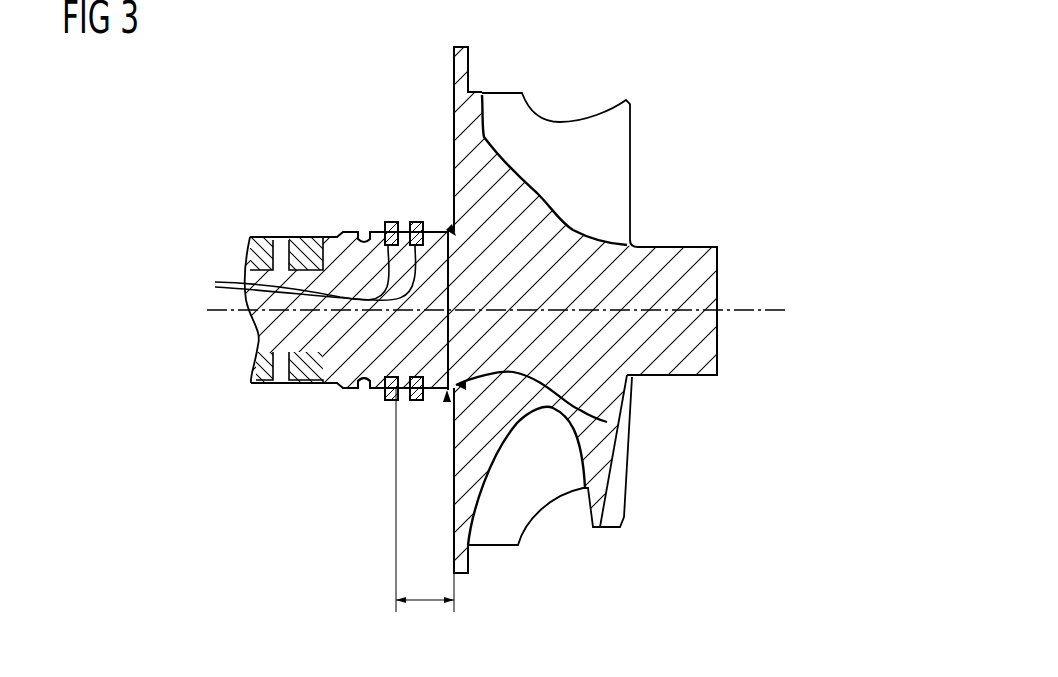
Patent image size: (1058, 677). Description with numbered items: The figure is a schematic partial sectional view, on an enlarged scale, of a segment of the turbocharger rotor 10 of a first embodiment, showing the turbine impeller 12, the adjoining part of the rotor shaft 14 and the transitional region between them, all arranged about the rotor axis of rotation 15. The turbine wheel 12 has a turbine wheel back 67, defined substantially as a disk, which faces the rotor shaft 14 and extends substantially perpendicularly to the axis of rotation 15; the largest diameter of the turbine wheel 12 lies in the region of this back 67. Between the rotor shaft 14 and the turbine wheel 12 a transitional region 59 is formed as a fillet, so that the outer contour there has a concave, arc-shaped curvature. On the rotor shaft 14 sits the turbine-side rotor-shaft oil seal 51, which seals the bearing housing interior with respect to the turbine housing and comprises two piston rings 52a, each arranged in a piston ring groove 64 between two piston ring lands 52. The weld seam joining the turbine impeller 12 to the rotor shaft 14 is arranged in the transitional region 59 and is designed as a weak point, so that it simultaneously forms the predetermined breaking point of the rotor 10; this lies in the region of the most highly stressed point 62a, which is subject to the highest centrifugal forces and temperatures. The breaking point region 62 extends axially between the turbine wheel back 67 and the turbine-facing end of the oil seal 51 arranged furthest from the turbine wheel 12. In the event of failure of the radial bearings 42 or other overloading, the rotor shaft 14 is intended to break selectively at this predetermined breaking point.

The turbocharger rotor 10 is at (688, 75).
The turbine impeller 12 is at (677, 266).
The rotor shaft 14 is at (280, 328).
The rotor axis of rotation 15 is at (774, 310).
The radial bearings 42 is at (278, 217).
The turbine-side rotor-shaft oil seal 51 is at (348, 403).
The piston ring lands 52 is at (425, 401).
The piston rings 52a is at (418, 221).
The transitional region 59 is at (447, 395).
The breaking point region 62 is at (427, 599).
The most highly stressed point 62a is at (607, 422).
The piston ring grooves 64 is at (301, 274).
The turbine wheel back 67 is at (453, 70).